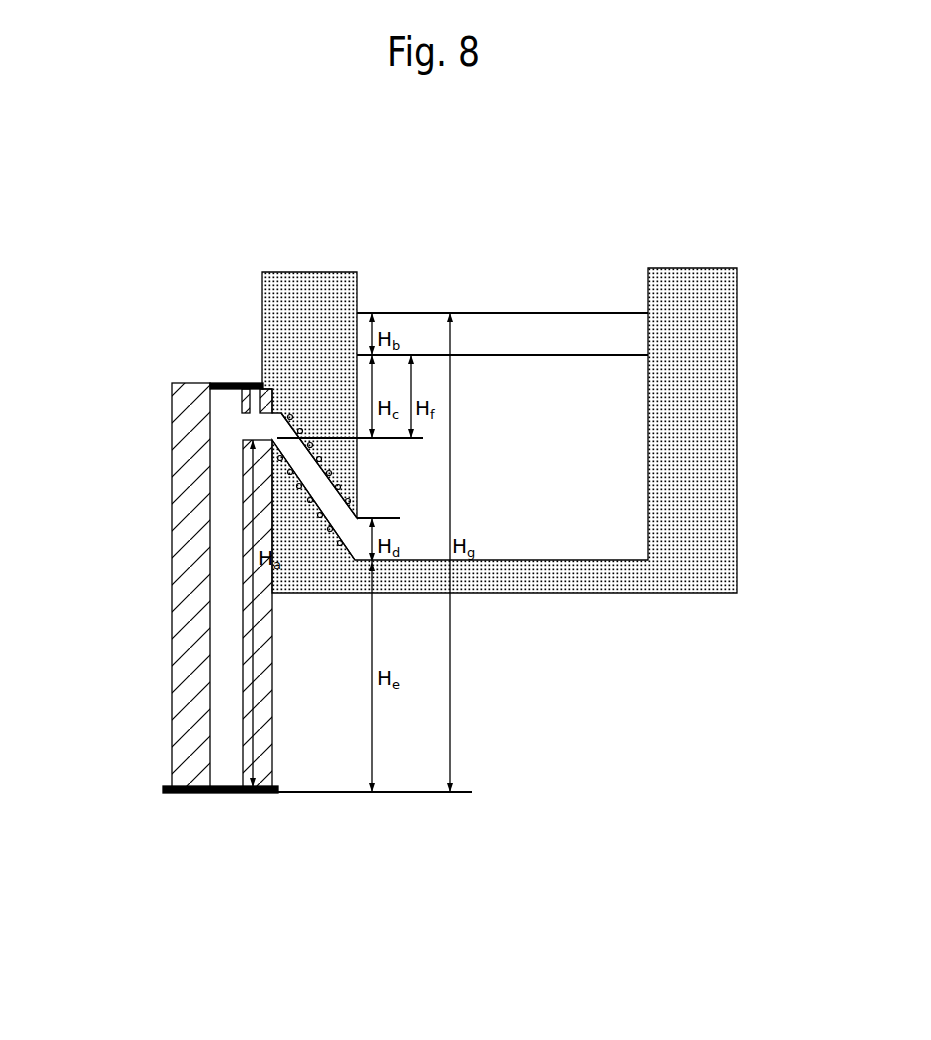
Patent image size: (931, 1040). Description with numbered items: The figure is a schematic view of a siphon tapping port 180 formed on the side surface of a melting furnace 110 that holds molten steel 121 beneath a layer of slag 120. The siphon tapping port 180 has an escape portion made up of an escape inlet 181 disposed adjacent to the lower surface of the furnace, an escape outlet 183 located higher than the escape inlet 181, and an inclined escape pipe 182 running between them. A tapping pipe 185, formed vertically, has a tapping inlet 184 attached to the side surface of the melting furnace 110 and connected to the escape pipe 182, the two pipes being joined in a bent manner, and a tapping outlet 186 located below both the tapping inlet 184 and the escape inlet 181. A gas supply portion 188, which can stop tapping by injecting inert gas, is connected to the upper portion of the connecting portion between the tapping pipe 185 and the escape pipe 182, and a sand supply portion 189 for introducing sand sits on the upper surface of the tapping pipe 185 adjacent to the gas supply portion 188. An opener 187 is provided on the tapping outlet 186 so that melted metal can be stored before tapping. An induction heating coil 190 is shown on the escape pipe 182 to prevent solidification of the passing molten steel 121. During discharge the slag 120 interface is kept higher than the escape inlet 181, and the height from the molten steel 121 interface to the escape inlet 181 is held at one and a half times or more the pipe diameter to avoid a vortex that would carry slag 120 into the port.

The melting furnace 110 is at (537, 389).
The slag 120 is at (623, 332).
The molten steel 121 is at (623, 410).
The siphon tapping port 180 is at (177, 213).
The escape inlet 181 is at (355, 538).
The escape pipe 182 is at (312, 498).
The escape outlet 183 is at (278, 420).
The tapping inlet 184 is at (248, 430).
The tapping pipe 185 is at (210, 524).
The tapping outlet 186 is at (220, 786).
The opener 187 is at (190, 793).
The gas supply portion 188 is at (256, 385).
The sand supply portion 189 is at (236, 383).
The induction heating coil 190 is at (302, 433).